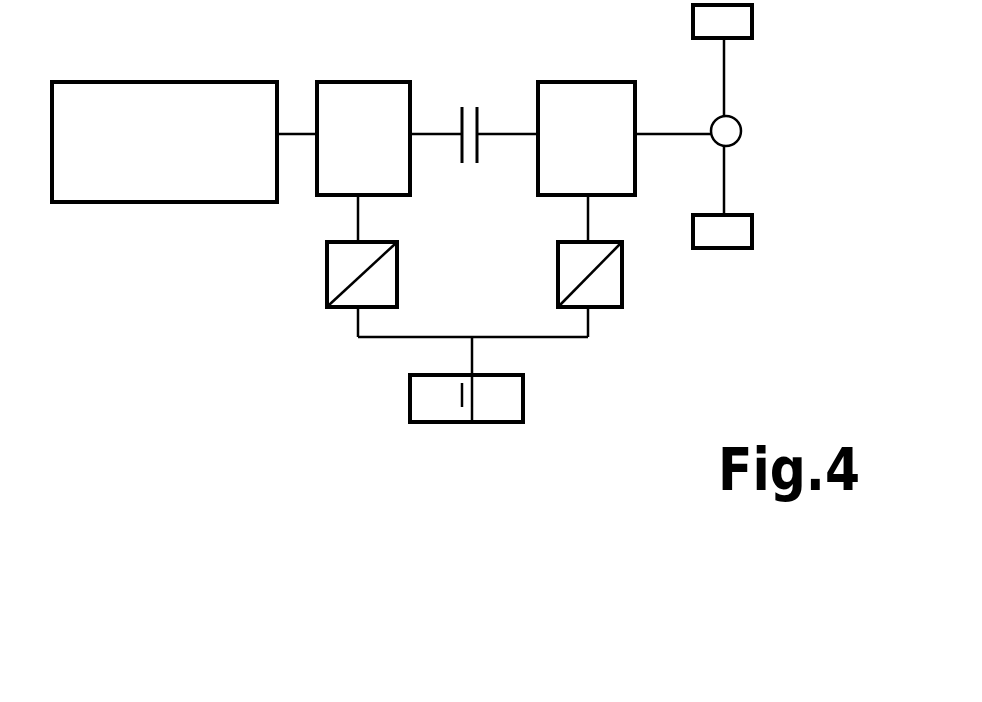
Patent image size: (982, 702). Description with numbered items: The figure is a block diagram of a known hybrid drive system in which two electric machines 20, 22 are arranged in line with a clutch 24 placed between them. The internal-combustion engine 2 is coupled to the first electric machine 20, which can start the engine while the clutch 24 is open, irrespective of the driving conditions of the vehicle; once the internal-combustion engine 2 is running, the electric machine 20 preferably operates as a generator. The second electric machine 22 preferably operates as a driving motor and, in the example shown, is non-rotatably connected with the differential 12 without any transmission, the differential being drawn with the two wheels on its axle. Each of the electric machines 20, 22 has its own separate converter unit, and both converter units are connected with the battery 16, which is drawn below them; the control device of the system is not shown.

The internal-combustion engine 2 is at (178, 82).
The electric machine 20 is at (358, 86).
The clutch 24 is at (463, 107).
The electric machine 22 is at (592, 88).
The differential 12 is at (741, 122).
The battery 16 is at (523, 407).